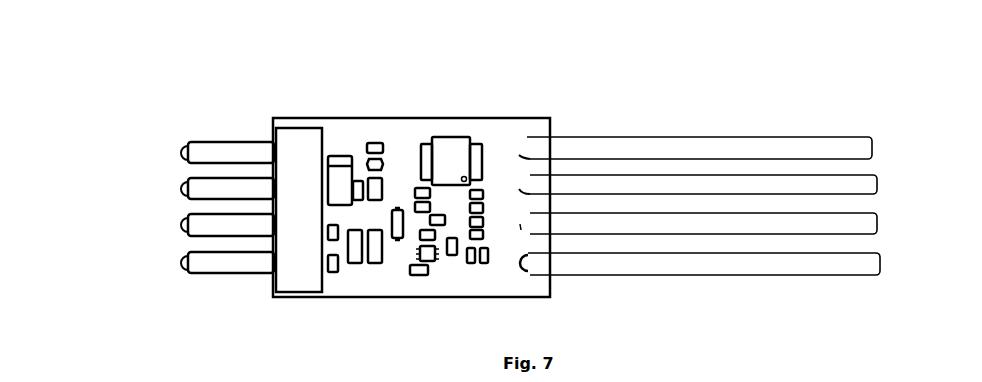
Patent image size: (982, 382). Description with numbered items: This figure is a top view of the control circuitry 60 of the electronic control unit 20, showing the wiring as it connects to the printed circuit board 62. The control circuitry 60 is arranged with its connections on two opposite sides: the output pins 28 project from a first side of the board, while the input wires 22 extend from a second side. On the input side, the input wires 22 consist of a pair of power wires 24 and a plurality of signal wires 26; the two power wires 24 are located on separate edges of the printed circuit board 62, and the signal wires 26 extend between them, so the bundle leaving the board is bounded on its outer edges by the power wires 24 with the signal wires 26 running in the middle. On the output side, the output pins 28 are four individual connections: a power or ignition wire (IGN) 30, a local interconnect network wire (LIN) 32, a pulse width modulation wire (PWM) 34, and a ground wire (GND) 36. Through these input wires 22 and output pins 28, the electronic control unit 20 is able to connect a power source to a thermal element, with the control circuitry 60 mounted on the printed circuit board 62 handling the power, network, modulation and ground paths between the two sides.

The electronic control unit 20 is at (181, 381).
The input wires 22 is at (699, 128).
The power wires 24 is at (727, 137).
The signal wires 26 is at (752, 175).
The output pins 28 is at (237, 128).
The power or ignition wire (IGN) 30 is at (183, 148).
The local interconnect network wire (LIN) 32 is at (183, 192).
The pulse width modulation wire (PWM) 34 is at (180, 226).
The ground wire (GND) 36 is at (183, 268).
The control circuitry 60 is at (585, 78).
The printed circuit board 62 is at (398, 157).